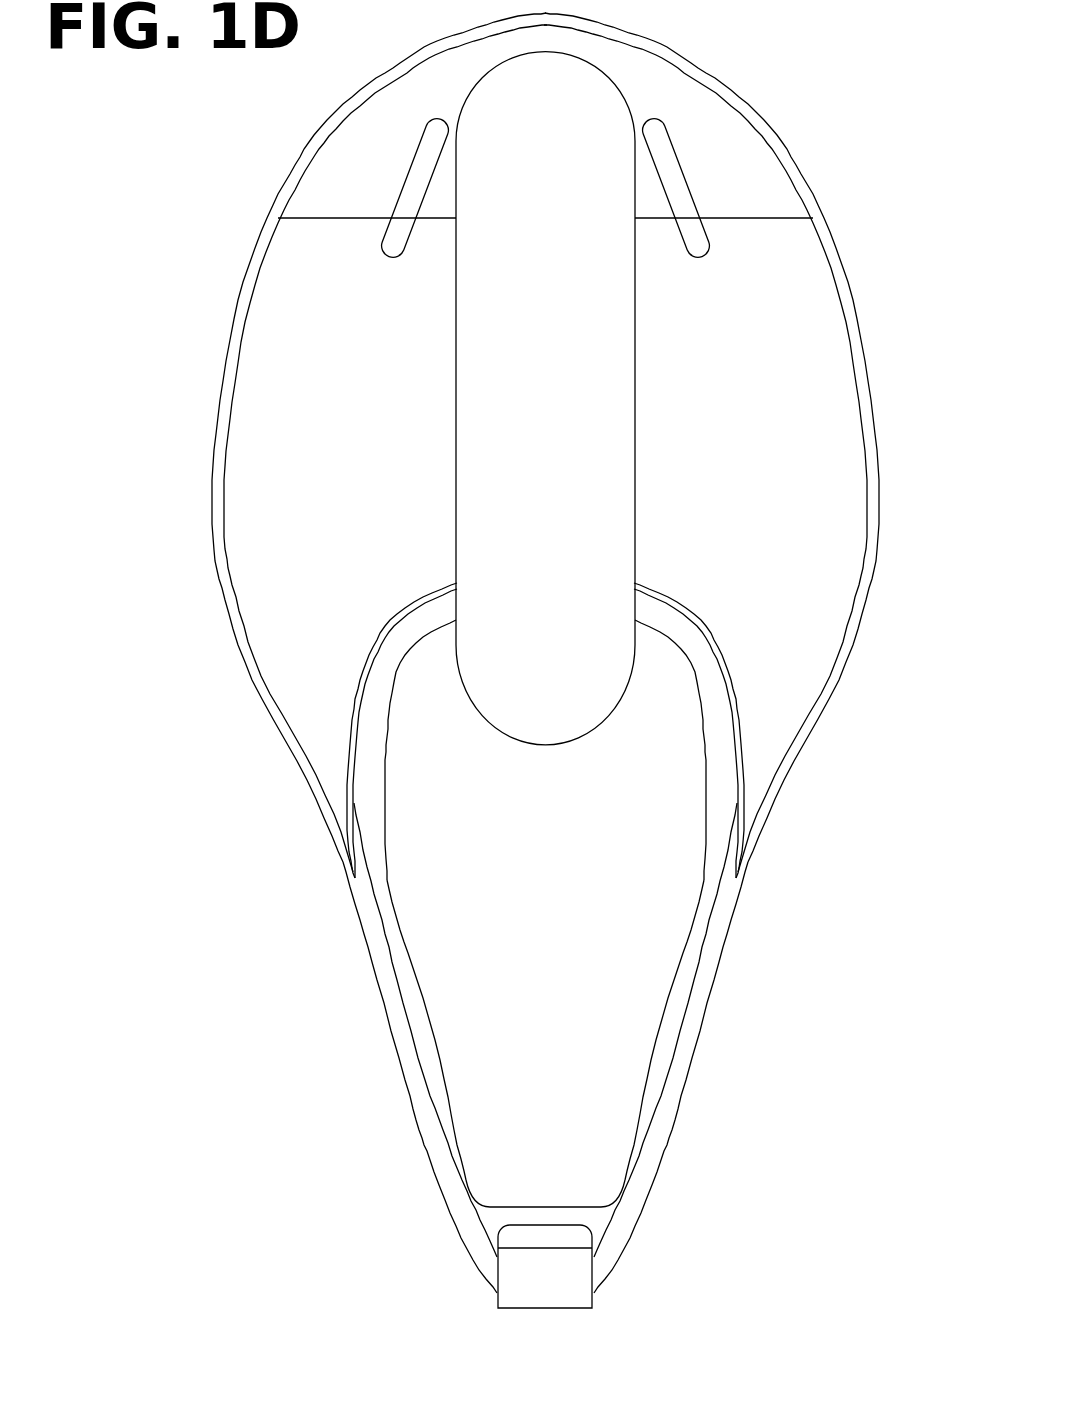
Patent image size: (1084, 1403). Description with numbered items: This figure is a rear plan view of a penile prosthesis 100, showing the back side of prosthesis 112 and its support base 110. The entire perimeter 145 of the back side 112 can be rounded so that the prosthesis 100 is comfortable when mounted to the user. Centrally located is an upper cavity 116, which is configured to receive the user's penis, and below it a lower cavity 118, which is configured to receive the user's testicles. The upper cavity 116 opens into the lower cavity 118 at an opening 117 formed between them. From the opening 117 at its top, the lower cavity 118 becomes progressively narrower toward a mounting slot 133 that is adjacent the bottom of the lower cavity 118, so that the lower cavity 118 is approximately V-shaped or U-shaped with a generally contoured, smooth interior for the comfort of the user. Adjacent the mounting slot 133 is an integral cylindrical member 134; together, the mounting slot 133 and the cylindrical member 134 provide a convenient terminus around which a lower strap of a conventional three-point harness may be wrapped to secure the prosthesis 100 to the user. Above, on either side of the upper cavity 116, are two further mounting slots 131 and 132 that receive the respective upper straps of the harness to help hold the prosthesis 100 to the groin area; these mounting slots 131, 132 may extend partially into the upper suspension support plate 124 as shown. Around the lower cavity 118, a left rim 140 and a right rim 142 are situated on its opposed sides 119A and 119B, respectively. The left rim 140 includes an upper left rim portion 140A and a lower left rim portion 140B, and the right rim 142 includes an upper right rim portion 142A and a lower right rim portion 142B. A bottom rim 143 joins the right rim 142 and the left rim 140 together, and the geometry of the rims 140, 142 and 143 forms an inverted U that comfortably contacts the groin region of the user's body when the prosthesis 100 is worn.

The penile prosthesis 100 is at (836, 36).
The support base 110 is at (780, 233).
The back side of prosthesis 112 is at (810, 325).
The upper cavity 116 is at (548, 445).
The opening of upper cavity 117 is at (548, 723).
The lower cavity 118 is at (555, 1023).
The opposed side of lower cavity 119A is at (418, 993).
The opposed side of lower cavity 119B is at (673, 993).
The upper suspension support plate 124 is at (848, 548).
The mounting slot 131 is at (683, 170).
The mounting slot 132 is at (408, 172).
The mounting slot 133 is at (575, 1237).
The integral cylindrical member 134 is at (563, 1283).
The left rim 140 is at (383, 897).
The upper left rim portion 140A is at (370, 740).
The lower left rim portion 140B is at (418, 1042).
The right rim 142 is at (707, 903).
The upper right rim portion 142A is at (721, 740).
The lower right rim portion 142B is at (673, 1042).
The bottom rim 143 is at (540, 1205).
The perimeter of support base 145 is at (228, 322).